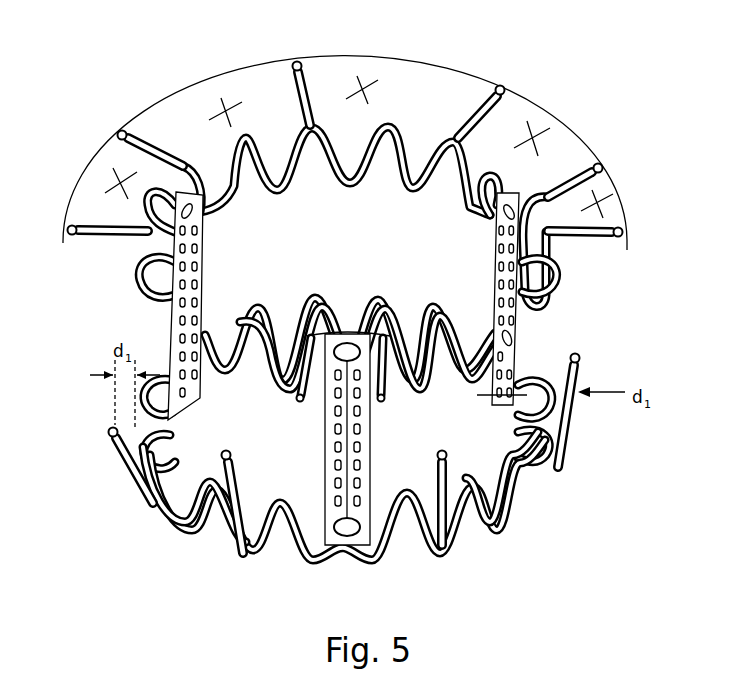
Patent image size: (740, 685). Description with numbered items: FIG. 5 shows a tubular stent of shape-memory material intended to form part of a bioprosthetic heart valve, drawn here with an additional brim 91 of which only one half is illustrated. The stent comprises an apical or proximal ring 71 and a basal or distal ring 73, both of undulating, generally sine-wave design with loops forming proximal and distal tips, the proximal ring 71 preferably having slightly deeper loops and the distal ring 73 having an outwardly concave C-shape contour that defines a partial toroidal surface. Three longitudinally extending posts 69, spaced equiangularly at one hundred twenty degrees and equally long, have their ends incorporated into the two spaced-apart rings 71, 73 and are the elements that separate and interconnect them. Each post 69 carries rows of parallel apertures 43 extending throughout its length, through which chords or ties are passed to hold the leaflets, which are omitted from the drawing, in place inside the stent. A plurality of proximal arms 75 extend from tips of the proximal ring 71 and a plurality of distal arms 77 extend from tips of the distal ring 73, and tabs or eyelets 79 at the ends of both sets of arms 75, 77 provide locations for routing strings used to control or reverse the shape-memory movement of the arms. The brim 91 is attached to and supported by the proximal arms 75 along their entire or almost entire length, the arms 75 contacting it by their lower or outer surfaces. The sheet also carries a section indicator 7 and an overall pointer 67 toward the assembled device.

The brim 91 is at (398, 83).
The frame 67 is at (266, 118).
The proximal ring 71 is at (398, 118).
The distal ring 73 is at (540, 497).
The apertures 43 is at (347, 368).
The posts 69 is at (372, 448).
The proximal arms 75 is at (157, 152).
The distal arms 77 is at (140, 488).
The eyelets 79 is at (503, 90).
The section line 7 is at (417, 398).